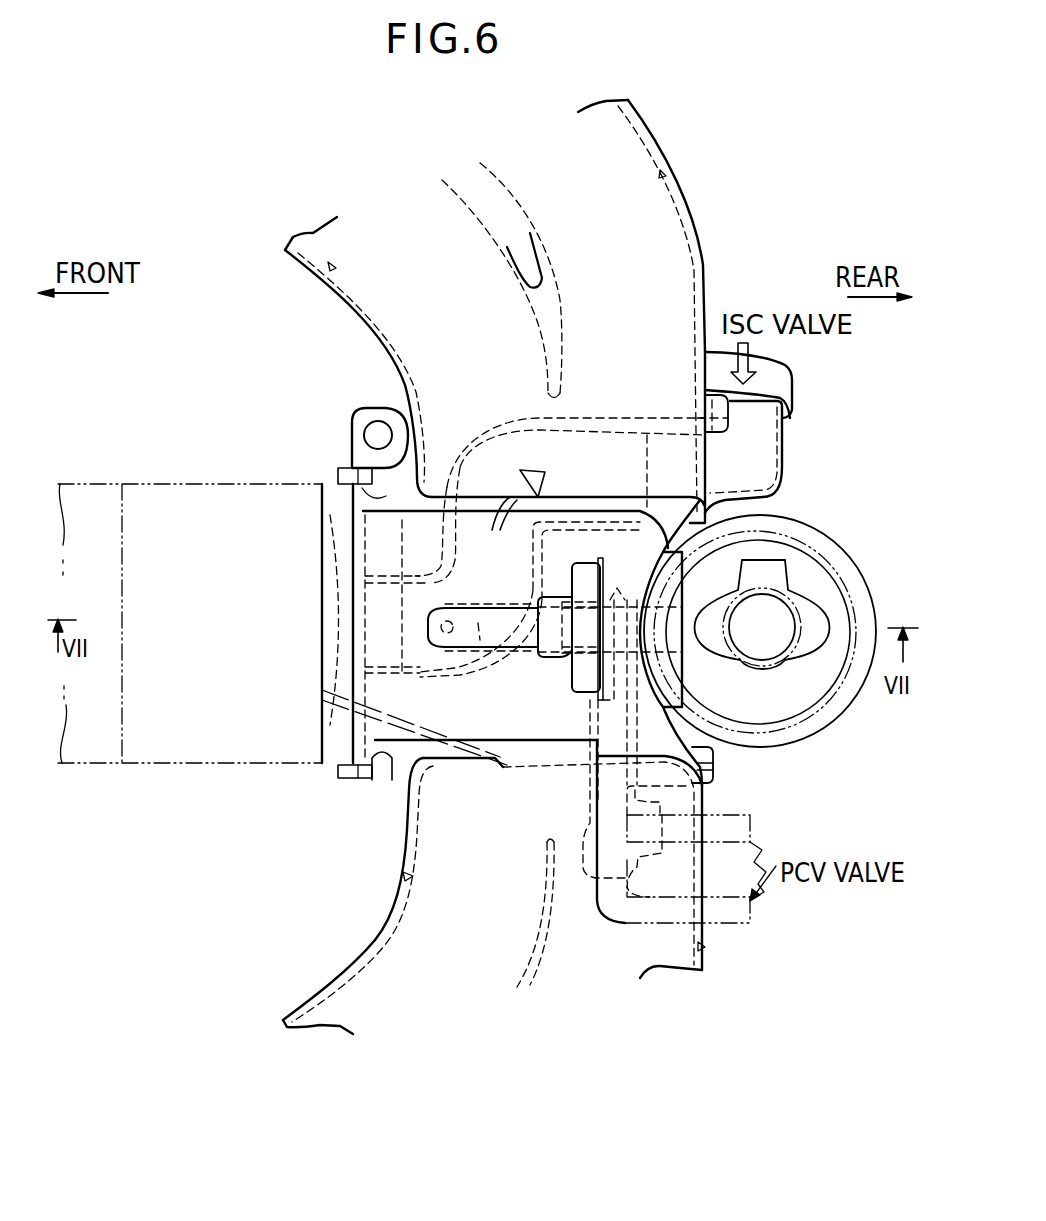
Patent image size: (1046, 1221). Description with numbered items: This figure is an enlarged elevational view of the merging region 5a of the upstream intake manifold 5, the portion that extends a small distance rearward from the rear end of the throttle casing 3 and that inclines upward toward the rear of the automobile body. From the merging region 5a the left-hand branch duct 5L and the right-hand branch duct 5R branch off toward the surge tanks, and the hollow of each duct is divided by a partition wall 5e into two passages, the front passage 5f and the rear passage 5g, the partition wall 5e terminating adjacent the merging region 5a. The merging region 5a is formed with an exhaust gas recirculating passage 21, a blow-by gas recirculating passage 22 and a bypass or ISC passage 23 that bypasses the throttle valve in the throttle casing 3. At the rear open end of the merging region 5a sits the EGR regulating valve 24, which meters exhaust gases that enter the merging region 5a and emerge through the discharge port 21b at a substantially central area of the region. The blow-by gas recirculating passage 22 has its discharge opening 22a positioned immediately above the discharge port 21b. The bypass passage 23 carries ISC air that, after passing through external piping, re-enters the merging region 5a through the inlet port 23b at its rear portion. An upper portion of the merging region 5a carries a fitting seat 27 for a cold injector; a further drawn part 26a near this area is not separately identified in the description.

The throttle casing 3 is at (240, 482).
The upstream intake manifold 5 is at (345, 400).
The left-hand branch duct 5L is at (706, 248).
The right-hand branch duct 5R is at (364, 944).
The merging region 5a is at (452, 717).
The partition wall 5e is at (556, 318).
The front passage 5f is at (330, 270).
The rear passage 5g is at (668, 170).
The exhaust gas recirculating passage 21 is at (478, 623).
The discharge port 21b is at (487, 637).
The blow-by gas recirculating passage 22 is at (708, 793).
The discharge opening 22a is at (574, 642).
The bypass passage 23 is at (576, 407).
The inlet port 23b is at (797, 383).
The EGR regulating valve 24 is at (843, 543).
The lever 26a is at (452, 600).
The fitting seat 27 is at (603, 557).